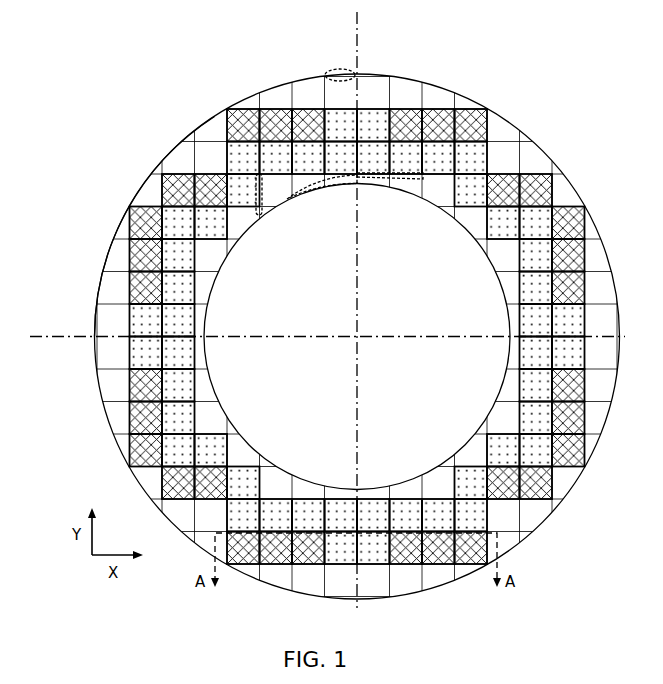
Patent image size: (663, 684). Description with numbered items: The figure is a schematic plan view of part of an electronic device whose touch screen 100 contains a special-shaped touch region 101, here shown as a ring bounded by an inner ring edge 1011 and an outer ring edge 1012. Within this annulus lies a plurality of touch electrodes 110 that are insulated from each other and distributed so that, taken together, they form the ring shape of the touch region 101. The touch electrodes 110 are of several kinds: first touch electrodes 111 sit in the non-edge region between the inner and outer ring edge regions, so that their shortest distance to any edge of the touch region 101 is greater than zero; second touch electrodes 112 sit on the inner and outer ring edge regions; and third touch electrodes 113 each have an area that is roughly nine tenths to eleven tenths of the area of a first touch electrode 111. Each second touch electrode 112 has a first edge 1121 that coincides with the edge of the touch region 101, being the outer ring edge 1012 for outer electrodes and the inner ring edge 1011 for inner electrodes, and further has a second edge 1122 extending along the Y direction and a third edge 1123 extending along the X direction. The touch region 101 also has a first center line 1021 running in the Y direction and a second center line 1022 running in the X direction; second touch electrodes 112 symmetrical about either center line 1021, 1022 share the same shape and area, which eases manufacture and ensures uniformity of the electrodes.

The touch screen 100 is at (331, 313).
The special-shaped touch region 101 is at (458, 84).
The touch electrodes 110 is at (315, 312).
The first touch electrodes 111 is at (177, 225).
The second touch electrodes 112 is at (295, 185).
The third touch electrodes 113 is at (473, 123).
The inner ring edge 1011 is at (213, 291).
The outer ring edge 1012 is at (110, 242).
The first center line 1021 is at (357, 317).
The second center line 1022 is at (78, 334).
The first edge 1121 is at (342, 68).
The second edge 1122 is at (259, 178).
The third edge 1123 is at (382, 177).